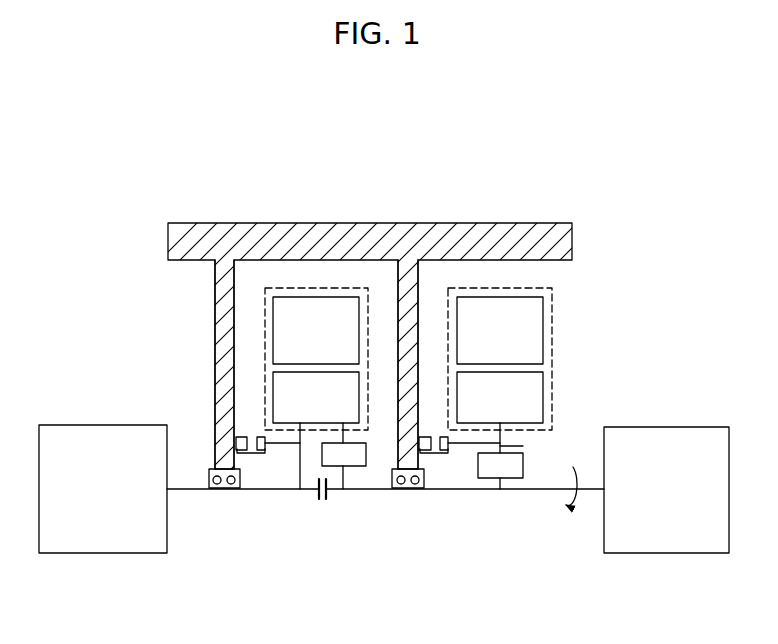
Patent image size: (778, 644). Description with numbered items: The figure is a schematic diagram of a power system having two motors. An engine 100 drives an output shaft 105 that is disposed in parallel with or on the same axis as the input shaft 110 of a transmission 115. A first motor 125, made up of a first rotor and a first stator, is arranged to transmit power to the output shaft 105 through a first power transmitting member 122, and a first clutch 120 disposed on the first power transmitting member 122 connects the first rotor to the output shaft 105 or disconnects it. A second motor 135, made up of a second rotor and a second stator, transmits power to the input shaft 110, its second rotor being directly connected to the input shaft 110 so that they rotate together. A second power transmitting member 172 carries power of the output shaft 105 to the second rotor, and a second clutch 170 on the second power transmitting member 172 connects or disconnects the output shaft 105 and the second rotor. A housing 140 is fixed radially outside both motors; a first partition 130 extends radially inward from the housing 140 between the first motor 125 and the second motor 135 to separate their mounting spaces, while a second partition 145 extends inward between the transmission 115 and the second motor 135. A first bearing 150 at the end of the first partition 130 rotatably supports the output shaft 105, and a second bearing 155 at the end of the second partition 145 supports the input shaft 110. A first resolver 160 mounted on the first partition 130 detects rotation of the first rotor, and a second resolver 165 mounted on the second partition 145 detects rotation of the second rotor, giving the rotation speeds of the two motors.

The engine 100 is at (665, 553).
The output shaft 105 is at (508, 490).
The input shaft 110 is at (192, 490).
The transmission 115 is at (103, 553).
The first clutch 120 is at (525, 470).
The first power transmitting member 122 is at (523, 446).
The first motor 125 is at (517, 288).
The first partition 130 is at (409, 292).
The second motor 135 is at (348, 288).
The housing 140 is at (280, 242).
The second partition 145 is at (222, 342).
The first bearing 150 is at (408, 492).
The second bearing 155 is at (226, 492).
The first resolver 160 is at (432, 454).
The second resolver 165 is at (250, 454).
The second clutch 170 is at (360, 468).
The second power transmitting member 172 is at (333, 491).